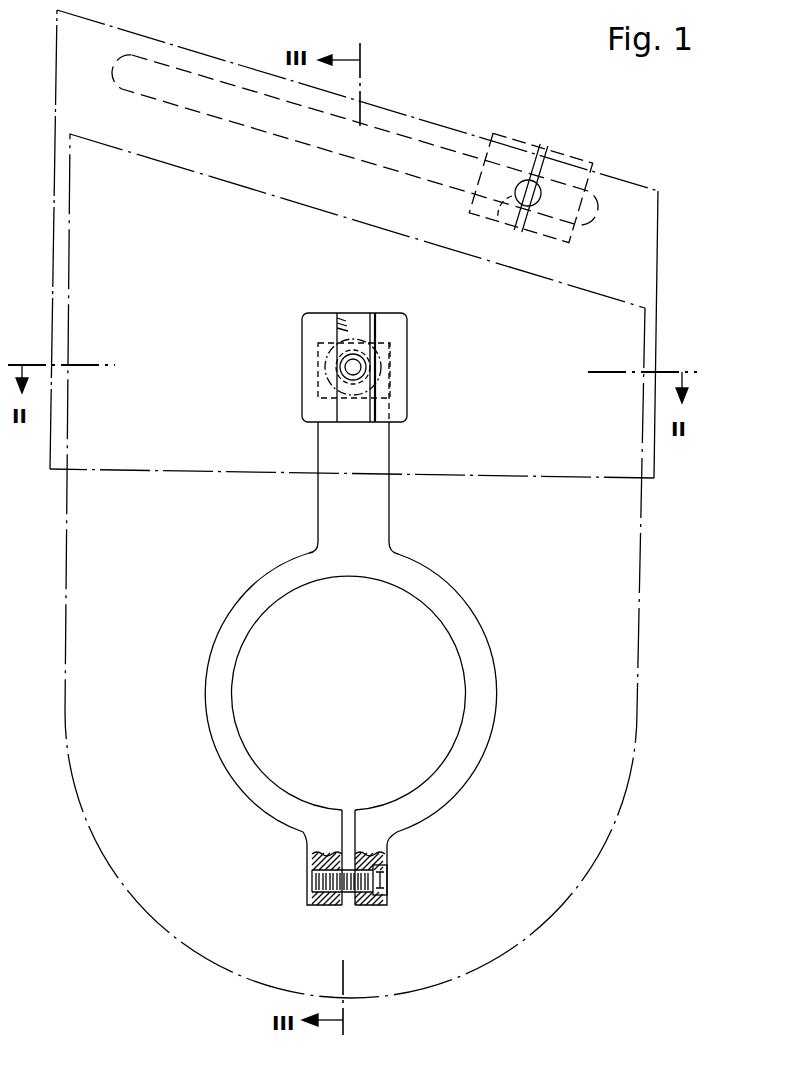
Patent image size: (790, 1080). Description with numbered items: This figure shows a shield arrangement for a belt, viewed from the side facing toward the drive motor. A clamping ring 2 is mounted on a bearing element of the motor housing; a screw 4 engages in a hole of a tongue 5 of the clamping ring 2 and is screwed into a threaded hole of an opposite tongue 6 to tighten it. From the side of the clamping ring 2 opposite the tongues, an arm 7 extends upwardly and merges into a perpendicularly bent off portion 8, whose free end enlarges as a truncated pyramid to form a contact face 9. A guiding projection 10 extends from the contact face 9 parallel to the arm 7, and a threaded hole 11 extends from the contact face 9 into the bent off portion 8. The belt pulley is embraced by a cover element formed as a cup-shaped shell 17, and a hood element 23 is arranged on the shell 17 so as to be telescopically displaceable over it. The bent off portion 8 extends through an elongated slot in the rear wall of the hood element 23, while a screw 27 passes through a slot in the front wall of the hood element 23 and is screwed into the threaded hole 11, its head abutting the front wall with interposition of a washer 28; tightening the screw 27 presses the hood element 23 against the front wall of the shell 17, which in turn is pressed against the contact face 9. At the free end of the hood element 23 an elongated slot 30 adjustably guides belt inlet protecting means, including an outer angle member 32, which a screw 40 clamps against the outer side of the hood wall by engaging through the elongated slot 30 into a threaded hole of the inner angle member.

The clamping ring 2 is at (475, 733).
The screw 4 is at (387, 888).
The tongue 5 is at (363, 907).
The opposite tongue 6 is at (318, 907).
The arm 7 is at (375, 517).
The bent off portion 8 is at (387, 393).
The contact face 9 is at (390, 330).
The guiding projection 10 is at (345, 318).
The threaded hole 11 is at (353, 367).
The cup-shaped shell 17 is at (610, 598).
The hood element 23 is at (160, 457).
The screw 27 is at (318, 381).
The washer 28 is at (320, 353).
The elongated slot 30 is at (189, 95).
The outer angle member 32 is at (568, 178).
The screw 40 is at (520, 205).